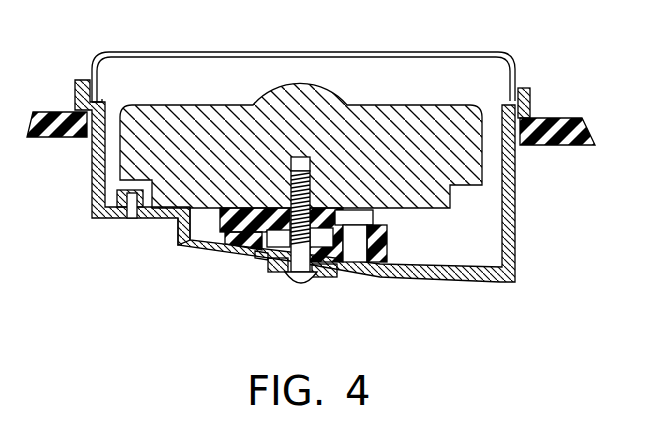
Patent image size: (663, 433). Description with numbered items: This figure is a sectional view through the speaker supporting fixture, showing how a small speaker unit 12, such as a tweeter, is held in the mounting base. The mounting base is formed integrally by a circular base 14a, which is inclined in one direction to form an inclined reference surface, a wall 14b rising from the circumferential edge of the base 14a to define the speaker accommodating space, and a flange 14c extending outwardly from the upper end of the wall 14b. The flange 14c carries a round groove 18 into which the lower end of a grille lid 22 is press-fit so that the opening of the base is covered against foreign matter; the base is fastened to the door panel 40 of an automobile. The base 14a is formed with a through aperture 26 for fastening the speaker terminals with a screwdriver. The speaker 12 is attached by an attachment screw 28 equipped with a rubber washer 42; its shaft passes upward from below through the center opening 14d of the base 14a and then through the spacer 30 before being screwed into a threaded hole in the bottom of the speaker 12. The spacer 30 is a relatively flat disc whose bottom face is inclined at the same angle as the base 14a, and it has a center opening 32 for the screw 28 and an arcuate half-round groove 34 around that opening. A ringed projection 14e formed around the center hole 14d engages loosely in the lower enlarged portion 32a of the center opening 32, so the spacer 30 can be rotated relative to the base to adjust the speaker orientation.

The speaker unit 12 is at (179, 108).
The circular base 14a is at (438, 282).
The wall 14b is at (508, 222).
The flange 14c is at (529, 100).
The center opening 14d is at (282, 275).
The ringed projection 14e is at (266, 263).
The round groove 18 is at (98, 97).
The grille lid 22 is at (398, 52).
The through aperture 26 is at (132, 213).
The attachment screw 28 is at (303, 283).
The spacer 30 is at (192, 247).
The center opening 32 is at (232, 245).
The lower enlarged portion 32a is at (255, 258).
The half-round groove 34 is at (390, 250).
The door panel 40 is at (574, 133).
The rubber washer 42 is at (333, 282).